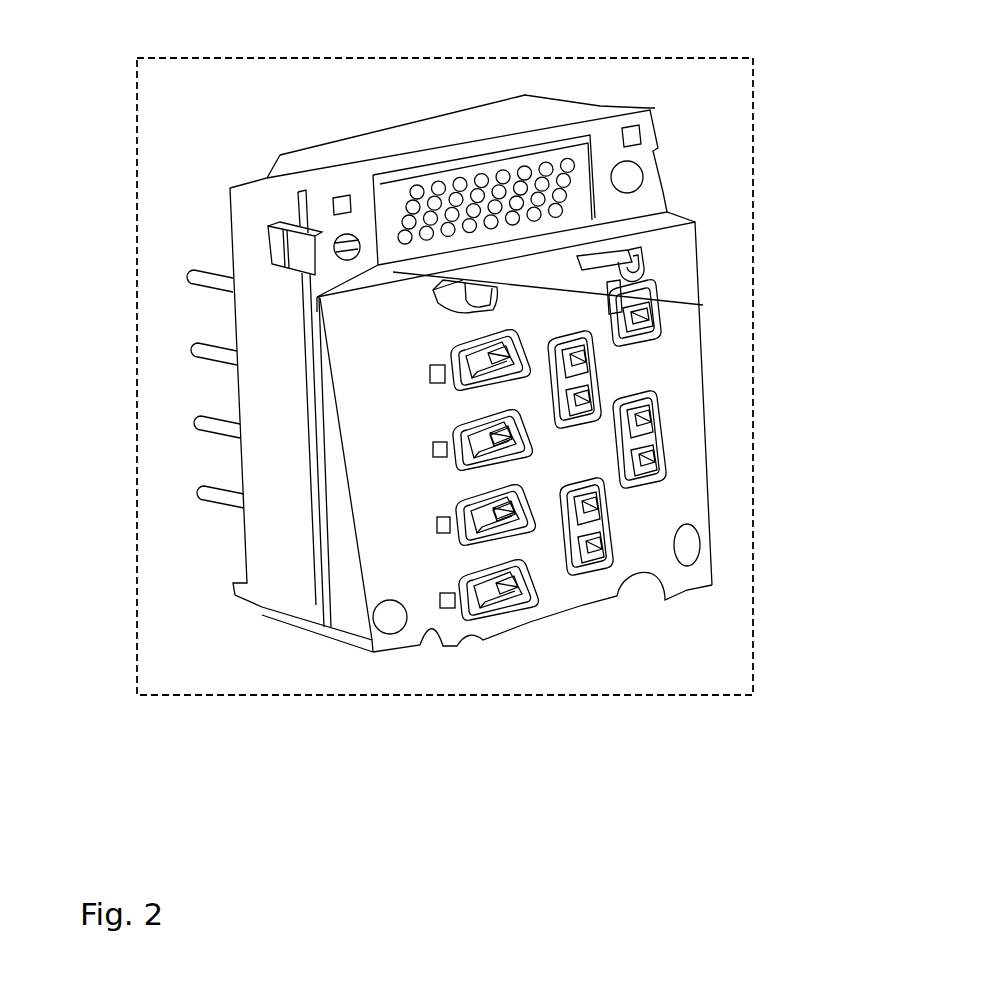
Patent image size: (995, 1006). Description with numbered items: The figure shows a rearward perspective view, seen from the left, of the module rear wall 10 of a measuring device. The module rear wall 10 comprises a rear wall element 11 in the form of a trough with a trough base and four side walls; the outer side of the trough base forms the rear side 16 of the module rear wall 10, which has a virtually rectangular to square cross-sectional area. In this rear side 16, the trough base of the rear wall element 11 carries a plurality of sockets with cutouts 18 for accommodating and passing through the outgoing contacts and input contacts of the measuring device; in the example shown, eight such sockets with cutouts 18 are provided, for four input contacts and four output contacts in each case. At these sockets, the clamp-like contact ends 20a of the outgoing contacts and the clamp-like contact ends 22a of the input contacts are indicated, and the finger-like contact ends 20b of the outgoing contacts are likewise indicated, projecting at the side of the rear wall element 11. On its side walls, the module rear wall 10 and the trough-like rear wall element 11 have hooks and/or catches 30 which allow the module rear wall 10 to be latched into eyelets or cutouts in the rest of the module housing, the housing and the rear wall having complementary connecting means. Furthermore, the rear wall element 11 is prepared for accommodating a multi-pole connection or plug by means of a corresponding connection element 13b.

The module rear wall 10 is at (368, 697).
The rear wall element 11 is at (315, 525).
The connection element 13b is at (496, 170).
The rear side 16 is at (398, 452).
The sockets with cutouts 18 is at (433, 578).
The clamp-like contact ends 20a is at (505, 520).
The finger-like contact ends 20b is at (207, 492).
The clamp-like contact ends 22a is at (588, 370).
The hooks and/or catches 30 is at (285, 250).